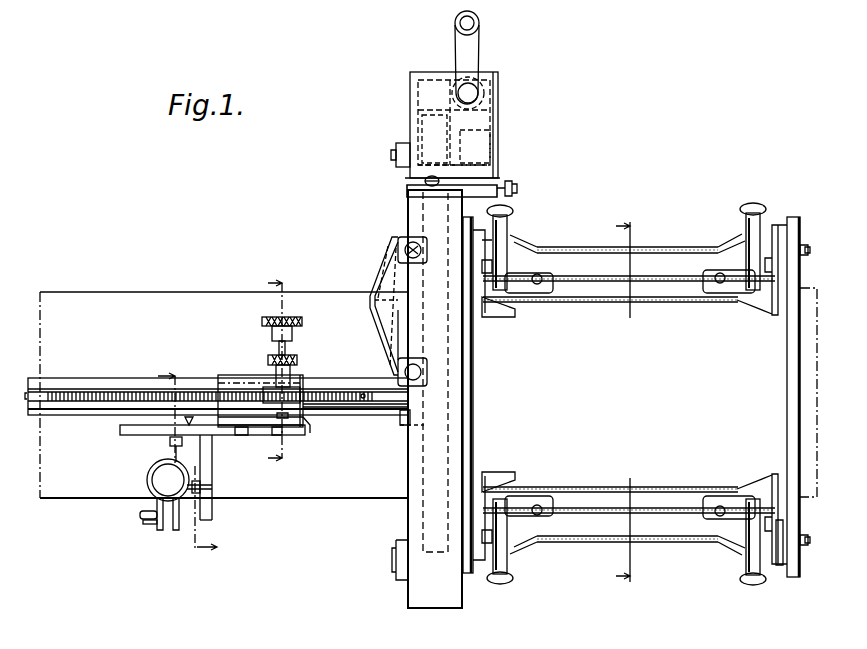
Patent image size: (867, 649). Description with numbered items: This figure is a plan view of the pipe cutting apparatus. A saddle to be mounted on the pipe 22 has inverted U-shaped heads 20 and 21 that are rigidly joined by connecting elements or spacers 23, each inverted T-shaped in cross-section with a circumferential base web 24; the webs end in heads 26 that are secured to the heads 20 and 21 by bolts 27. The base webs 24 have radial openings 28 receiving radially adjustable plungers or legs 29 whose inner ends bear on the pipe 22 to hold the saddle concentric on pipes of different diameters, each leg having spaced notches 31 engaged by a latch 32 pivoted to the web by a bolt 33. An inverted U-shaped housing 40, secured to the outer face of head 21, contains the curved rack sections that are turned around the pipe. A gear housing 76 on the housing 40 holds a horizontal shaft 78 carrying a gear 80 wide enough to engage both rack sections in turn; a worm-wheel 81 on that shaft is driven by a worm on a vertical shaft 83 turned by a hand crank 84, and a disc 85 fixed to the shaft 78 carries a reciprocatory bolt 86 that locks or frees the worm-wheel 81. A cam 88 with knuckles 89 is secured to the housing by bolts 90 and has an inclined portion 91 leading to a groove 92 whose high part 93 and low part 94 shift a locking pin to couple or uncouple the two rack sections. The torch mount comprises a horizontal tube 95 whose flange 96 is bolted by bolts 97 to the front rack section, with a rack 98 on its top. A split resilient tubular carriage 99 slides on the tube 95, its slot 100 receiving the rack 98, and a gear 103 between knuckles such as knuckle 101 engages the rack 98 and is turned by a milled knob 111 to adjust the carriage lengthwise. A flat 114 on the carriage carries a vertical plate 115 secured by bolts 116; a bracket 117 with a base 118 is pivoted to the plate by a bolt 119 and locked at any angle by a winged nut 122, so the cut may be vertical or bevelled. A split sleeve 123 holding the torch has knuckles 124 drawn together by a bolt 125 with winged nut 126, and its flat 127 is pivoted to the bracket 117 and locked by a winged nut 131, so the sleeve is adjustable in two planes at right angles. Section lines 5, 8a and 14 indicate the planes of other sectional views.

The section line 5 is at (615, 402).
The section line 8a is at (150, 372).
The section line 14 / carriage 14 is at (259, 376).
The head 20 is at (794, 365).
The head 21 is at (469, 358).
The pipe 22 is at (358, 499).
The connecting element or spacer 23 is at (689, 247).
The base web 24 is at (676, 508).
The head 26 is at (478, 297).
The bolt 27 is at (779, 565).
The radial opening 28 is at (748, 272).
The plunger or leg 29 is at (735, 291).
The notch 31 is at (746, 270).
The latch 32 is at (520, 275).
The bolt 33 is at (556, 510).
The housing 40 is at (448, 607).
The gear housing 76 is at (430, 93).
The horizontal rotatable shaft 78 is at (396, 155).
The gear 80 is at (428, 127).
The worm-wheel 81 is at (470, 137).
The vertical shaft 83 is at (473, 95).
The hand crank 84 is at (486, 58).
The disc 85 is at (494, 172).
The reciprocatory bolt 86 is at (518, 187).
The cam 88 is at (380, 258).
The knuckle 89 is at (410, 245).
The bolt 90 is at (404, 252).
The inclined portion 91 is at (397, 336).
The groove 92 is at (375, 302).
The high part 93 is at (377, 300).
The low part 94 is at (402, 250).
The horizontal tube or supporting element 95 is at (80, 406).
The flange 96 is at (410, 418).
The bolt 97 is at (416, 432).
The rack 98 is at (338, 403).
The tubular carriage 99 is at (225, 377).
The longitudinal slot 100 is at (235, 377).
The knuckle 101 is at (292, 389).
The gear 103 is at (300, 398).
The milled knob 111 is at (272, 318).
The flat 114 is at (306, 418).
The longitudinal vertical plate 115 is at (305, 431).
The bolt 116 is at (218, 437).
The bracket 117 is at (212, 517).
The base 118 is at (170, 441).
The bolt 119 is at (175, 450).
The winged nut 122 is at (187, 417).
The split resilient sleeve or socket 123 is at (147, 480).
The knuckle 124 is at (160, 530).
The bolt 125 is at (145, 514).
The winged nut 126 is at (150, 521).
The flat 127 is at (217, 487).
The winged nut 131 is at (203, 485).